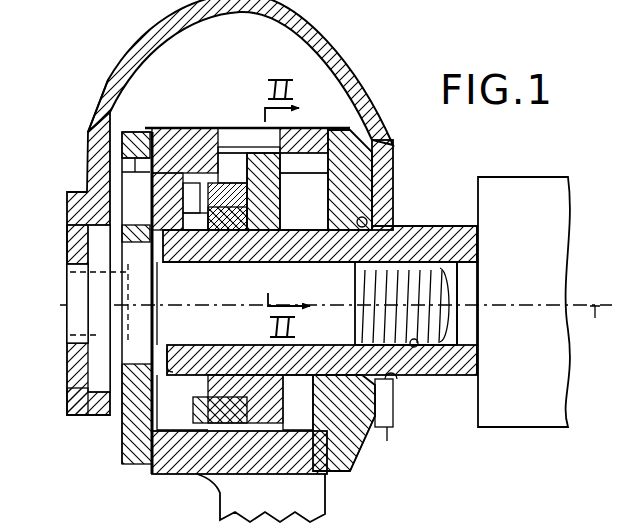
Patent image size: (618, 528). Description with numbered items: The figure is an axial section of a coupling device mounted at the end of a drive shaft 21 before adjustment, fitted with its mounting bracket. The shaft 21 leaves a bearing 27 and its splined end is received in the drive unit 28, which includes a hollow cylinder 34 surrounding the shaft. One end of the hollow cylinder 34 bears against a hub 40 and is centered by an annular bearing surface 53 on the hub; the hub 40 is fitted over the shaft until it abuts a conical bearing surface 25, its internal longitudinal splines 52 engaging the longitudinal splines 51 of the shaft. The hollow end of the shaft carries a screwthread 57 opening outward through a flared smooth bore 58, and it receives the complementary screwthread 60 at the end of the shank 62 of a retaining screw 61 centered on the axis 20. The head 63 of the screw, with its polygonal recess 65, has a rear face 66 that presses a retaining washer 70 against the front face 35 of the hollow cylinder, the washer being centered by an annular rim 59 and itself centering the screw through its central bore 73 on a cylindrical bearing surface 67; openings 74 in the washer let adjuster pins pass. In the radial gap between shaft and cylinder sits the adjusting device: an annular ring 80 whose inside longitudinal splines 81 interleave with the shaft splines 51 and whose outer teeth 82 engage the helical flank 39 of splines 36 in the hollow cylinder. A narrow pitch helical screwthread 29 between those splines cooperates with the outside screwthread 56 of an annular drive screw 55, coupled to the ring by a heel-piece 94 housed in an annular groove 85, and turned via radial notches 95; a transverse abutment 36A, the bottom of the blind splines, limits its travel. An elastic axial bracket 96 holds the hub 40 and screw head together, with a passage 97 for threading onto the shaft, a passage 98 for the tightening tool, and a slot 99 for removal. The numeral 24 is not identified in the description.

The axis 20 is at (336, 329).
The drive shaft 21 is at (455, 224).
The support bracket 24 is at (245, 501).
The bearing surface 25 is at (367, 223).
The bearing 27 is at (522, 177).
The drive unit 28 is at (211, 499).
The helical screwthread 29 is at (157, 140).
The hollow cylinder 34 is at (173, 126).
The front face 35 is at (88, 134).
The splines 36 is at (250, 150).
The transverse abutment 36A is at (222, 183).
The helical flank 39 is at (300, 128).
The hub 40 is at (358, 468).
The longitudinal splines 51 is at (190, 377).
The longitudinal splines 52 is at (345, 362).
The annular bearing surface 53 is at (320, 153).
The annular drive screw 55 is at (252, 200).
The outside screwthread 56 is at (220, 128).
The screwthread 57 is at (416, 348).
The smooth bore 58 is at (343, 230).
The annular rim 59 is at (128, 135).
The screwthread 60 is at (427, 277).
The retaining screw 61 is at (89, 319).
The shank 62 is at (295, 372).
The head 63 is at (98, 381).
The polygonal recess 65 is at (76, 280).
The rear face 66 is at (127, 230).
The cylindrical bearing surface 67 is at (175, 372).
The retaining washer 70 is at (117, 433).
The central bore 73 is at (138, 245).
The openings 74 is at (133, 180).
The annular ring 80 is at (290, 211).
The longitudinal splines 81 is at (217, 217).
The teeth 82 is at (268, 140).
The annular groove 85 is at (250, 207).
The heel-piece 94 is at (235, 217).
The radial notches 95 is at (200, 205).
The elastic axial bracket 96 is at (368, 84).
The passage 97 is at (392, 434).
The passage 98 is at (78, 353).
The slot 99 is at (364, 458).